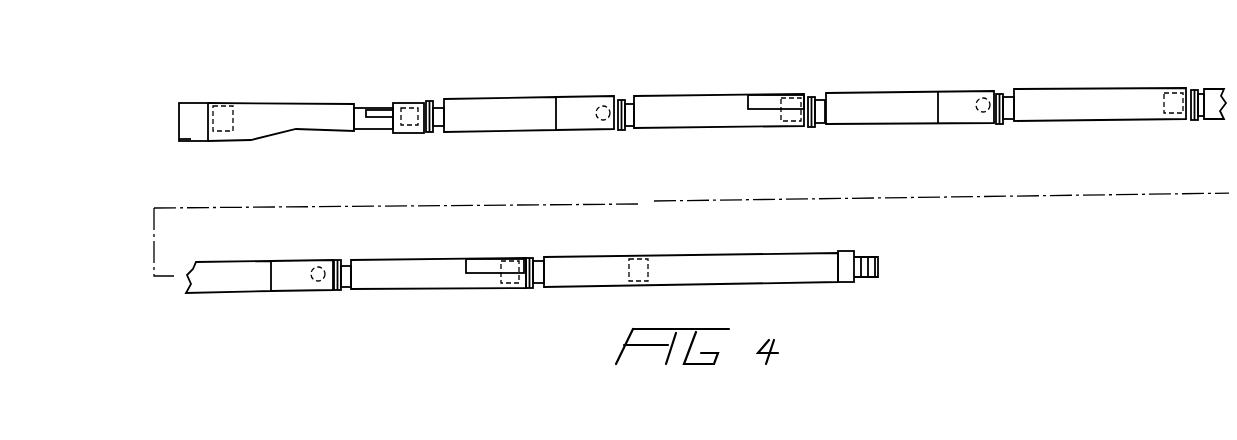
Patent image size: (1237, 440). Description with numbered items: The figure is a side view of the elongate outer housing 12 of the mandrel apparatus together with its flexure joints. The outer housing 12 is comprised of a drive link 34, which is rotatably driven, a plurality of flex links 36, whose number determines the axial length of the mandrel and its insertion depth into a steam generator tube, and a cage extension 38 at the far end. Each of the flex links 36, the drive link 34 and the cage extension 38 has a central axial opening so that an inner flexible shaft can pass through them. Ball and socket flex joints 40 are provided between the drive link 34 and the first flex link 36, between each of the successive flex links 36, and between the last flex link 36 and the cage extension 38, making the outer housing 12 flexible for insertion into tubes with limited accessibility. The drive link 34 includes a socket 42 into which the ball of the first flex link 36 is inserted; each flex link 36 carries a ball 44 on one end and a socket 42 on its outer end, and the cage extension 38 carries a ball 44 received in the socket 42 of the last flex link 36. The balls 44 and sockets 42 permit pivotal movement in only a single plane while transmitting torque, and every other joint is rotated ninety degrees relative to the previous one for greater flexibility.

The elongate outer housing 12 is at (718, 132).
The drive link 34 is at (305, 104).
The flex link 36 is at (513, 101).
The cage extension 38 is at (777, 252).
The ball and socket flex joint 40 is at (418, 133).
The socket 42 is at (400, 112).
The ball 44 is at (600, 113).